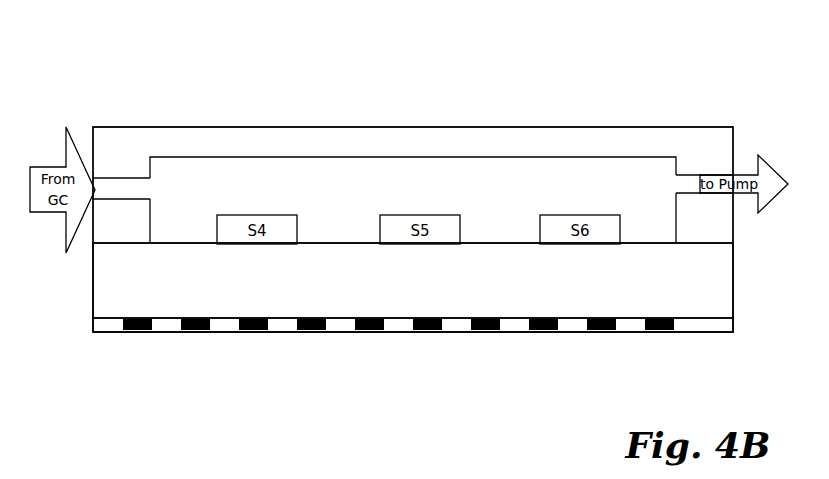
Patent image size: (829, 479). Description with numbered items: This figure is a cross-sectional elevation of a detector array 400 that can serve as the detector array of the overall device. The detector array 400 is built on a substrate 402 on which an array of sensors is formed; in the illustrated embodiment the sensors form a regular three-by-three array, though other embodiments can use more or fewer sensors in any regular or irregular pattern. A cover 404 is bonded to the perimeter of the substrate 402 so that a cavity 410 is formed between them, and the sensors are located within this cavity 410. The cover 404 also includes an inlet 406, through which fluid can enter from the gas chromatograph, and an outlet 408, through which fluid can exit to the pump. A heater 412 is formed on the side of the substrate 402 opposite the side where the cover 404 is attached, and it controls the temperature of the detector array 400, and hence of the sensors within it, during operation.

The detector array 400 is at (570, 68).
The substrate 402 is at (98, 290).
The cover 404 is at (181, 134).
The inlet 406 is at (123, 192).
The outlet 408 is at (688, 185).
The cavity 410 is at (408, 180).
The heater 412 is at (407, 332).